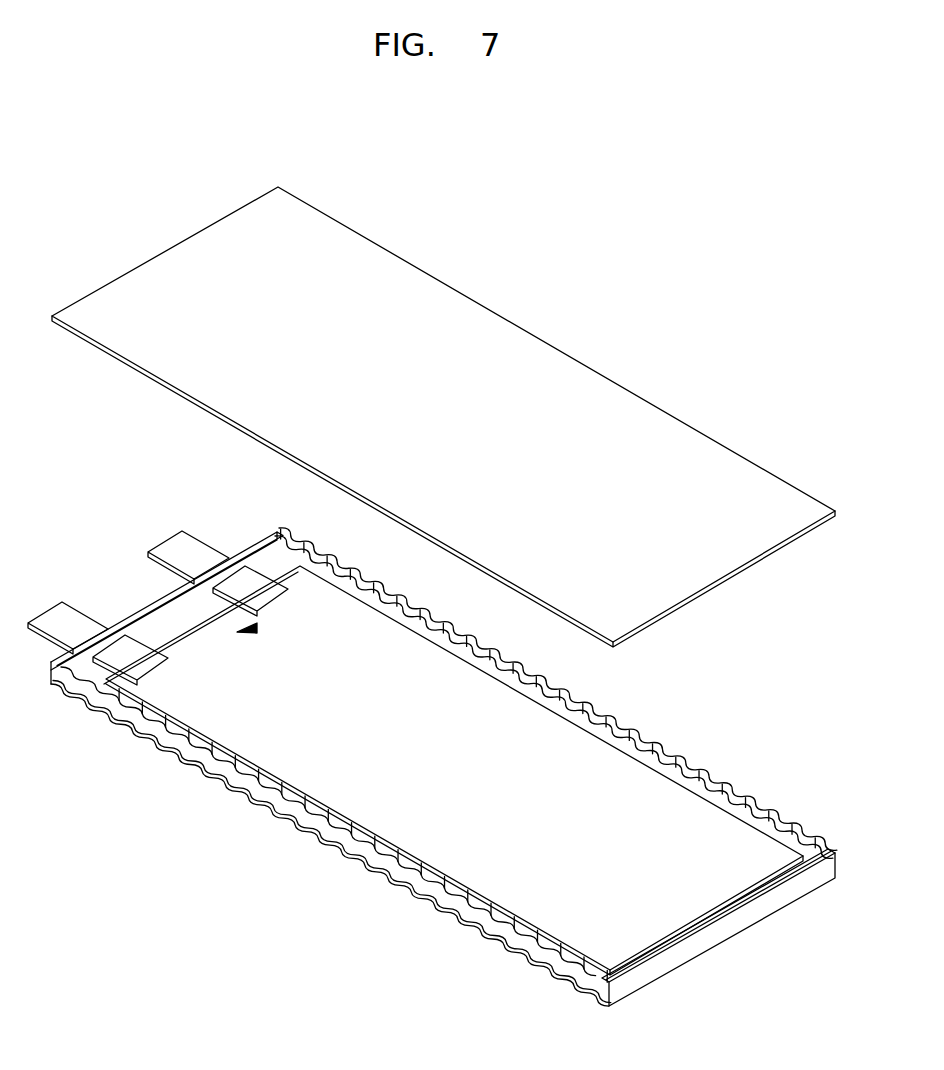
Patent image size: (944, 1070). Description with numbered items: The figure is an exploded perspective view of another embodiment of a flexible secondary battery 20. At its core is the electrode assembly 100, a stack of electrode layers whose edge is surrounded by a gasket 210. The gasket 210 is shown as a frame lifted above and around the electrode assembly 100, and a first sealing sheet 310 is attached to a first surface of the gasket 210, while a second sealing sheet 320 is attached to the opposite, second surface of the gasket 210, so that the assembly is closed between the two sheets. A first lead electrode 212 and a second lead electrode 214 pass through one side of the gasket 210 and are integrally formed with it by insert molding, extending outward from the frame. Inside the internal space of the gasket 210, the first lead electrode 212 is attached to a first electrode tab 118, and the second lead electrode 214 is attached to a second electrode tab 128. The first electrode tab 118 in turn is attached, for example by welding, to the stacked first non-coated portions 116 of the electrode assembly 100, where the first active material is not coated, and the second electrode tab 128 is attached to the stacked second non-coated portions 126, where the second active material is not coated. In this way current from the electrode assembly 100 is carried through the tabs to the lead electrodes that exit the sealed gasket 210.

The flexible secondary battery 20 is at (770, 387).
The electrode assembly 100 is at (617, 772).
The first non-coated portion 116 is at (128, 700).
The first electrode tab 118 is at (135, 665).
The second non-coated portion 126 is at (316, 592).
The second electrode tab 128 is at (265, 597).
The gasket 210 is at (831, 852).
The first lead electrode 212 is at (68, 614).
The second lead electrode 214 is at (187, 547).
The first sealing sheet 310 is at (805, 508).
The second sealing sheet 320 is at (727, 940).